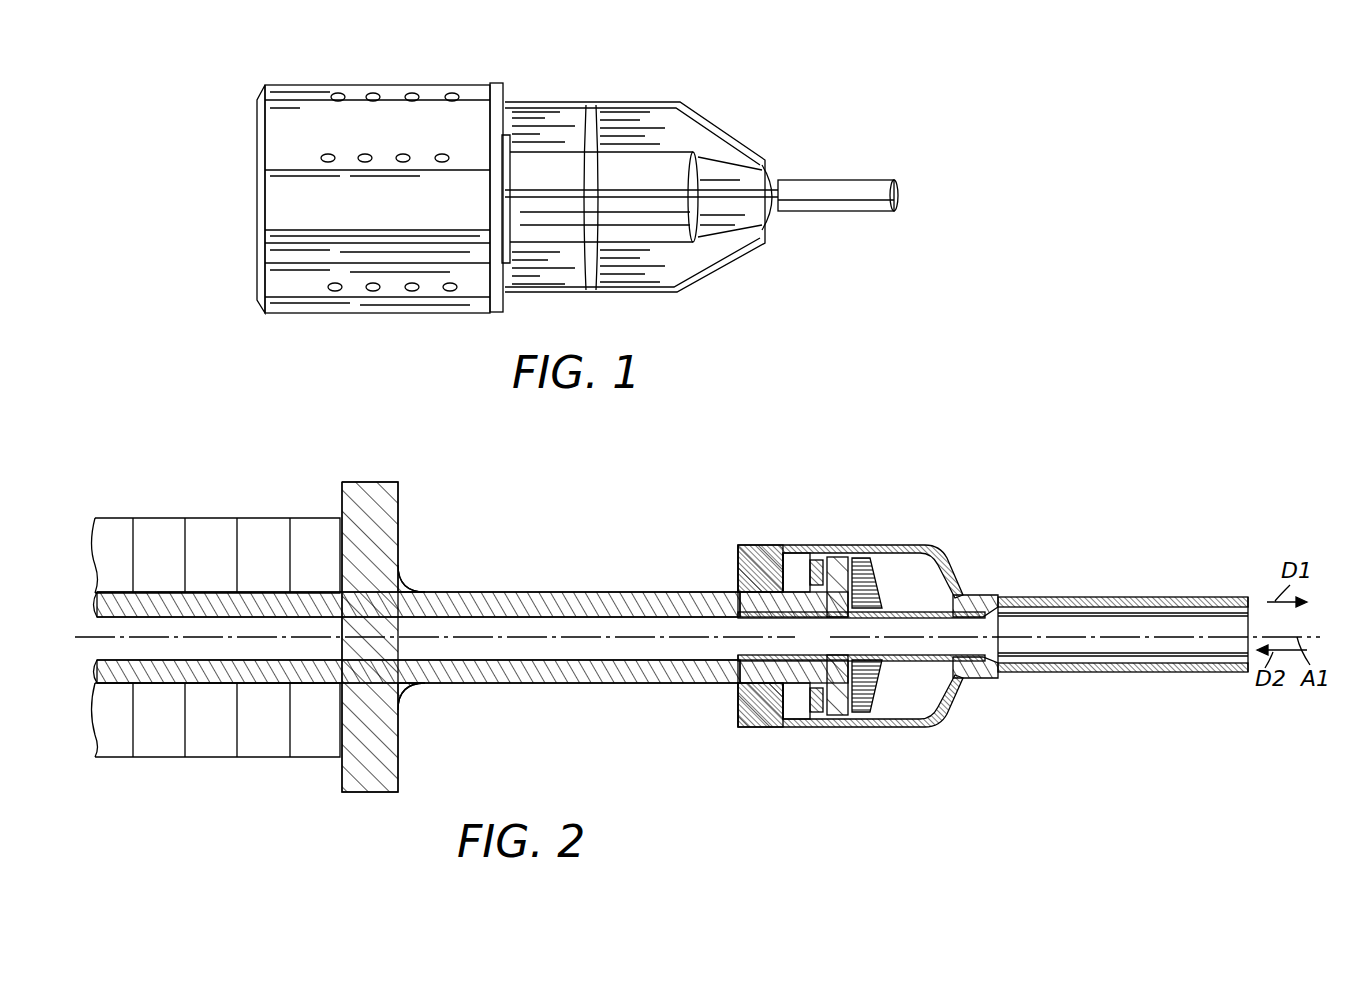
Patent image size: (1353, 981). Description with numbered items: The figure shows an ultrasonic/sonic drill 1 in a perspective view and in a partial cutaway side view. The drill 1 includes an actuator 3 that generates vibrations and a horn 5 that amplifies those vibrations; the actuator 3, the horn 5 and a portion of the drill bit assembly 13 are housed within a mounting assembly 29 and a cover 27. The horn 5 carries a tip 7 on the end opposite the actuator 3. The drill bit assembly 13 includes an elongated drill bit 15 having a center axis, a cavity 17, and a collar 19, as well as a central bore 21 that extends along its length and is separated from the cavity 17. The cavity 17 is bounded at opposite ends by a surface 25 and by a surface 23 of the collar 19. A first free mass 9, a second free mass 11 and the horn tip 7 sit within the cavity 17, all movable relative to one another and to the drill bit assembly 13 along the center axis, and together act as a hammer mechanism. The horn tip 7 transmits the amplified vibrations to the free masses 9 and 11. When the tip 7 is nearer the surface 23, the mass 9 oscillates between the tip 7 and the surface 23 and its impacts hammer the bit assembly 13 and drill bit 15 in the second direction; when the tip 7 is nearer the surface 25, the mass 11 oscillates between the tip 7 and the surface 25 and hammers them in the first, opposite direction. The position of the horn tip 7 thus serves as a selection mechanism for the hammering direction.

In FIG. 1, the ultrasonic/sonic drill 1 is at (806, 98).
In FIG. 2, the ultrasonic/sonic drill 1 is at (670, 541).
In FIG. 2, the actuator 3 is at (83, 483).
In FIG. 2, the horn 5 is at (382, 482).
In FIG. 2, the tip 7 is at (843, 715).
In FIG. 2, the first free mass 9 is at (818, 558).
In FIG. 2, the second free mass 11 is at (882, 570).
In FIG. 2, the drill bit assembly 13 is at (1050, 580).
In FIG. 1, the drill bit 15 is at (850, 178).
In FIG. 2, the drill bit 15 is at (1143, 673).
In FIG. 2, the cavity 17 is at (790, 557).
In FIG. 2, the collar 19 is at (737, 727).
In FIG. 2, the central bore 21 is at (540, 637).
In FIG. 2, the surface of the collar 23 is at (790, 710).
In FIG. 2, the surface 25 is at (940, 678).
In FIG. 1, the cover 27 is at (682, 102).
In FIG. 1, the mounting assembly 29 is at (407, 83).